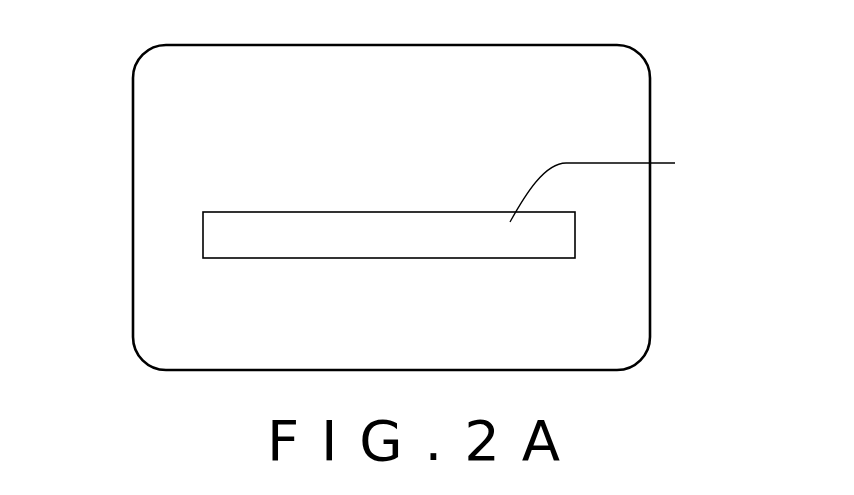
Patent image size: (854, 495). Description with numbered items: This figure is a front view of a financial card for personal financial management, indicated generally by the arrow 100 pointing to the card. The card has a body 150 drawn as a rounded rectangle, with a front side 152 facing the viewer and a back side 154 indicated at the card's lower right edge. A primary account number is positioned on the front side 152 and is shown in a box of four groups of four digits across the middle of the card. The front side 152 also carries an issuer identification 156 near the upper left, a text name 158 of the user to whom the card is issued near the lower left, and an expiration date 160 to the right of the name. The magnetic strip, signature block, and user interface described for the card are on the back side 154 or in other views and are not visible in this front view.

The payment card 100 is at (508, 32).
The body 150 is at (133, 107).
The front side 152 is at (597, 112).
The back side 154 is at (640, 358).
The issuer identification 156 is at (230, 122).
The text name 158 is at (238, 332).
The expiration date 160 is at (430, 325).